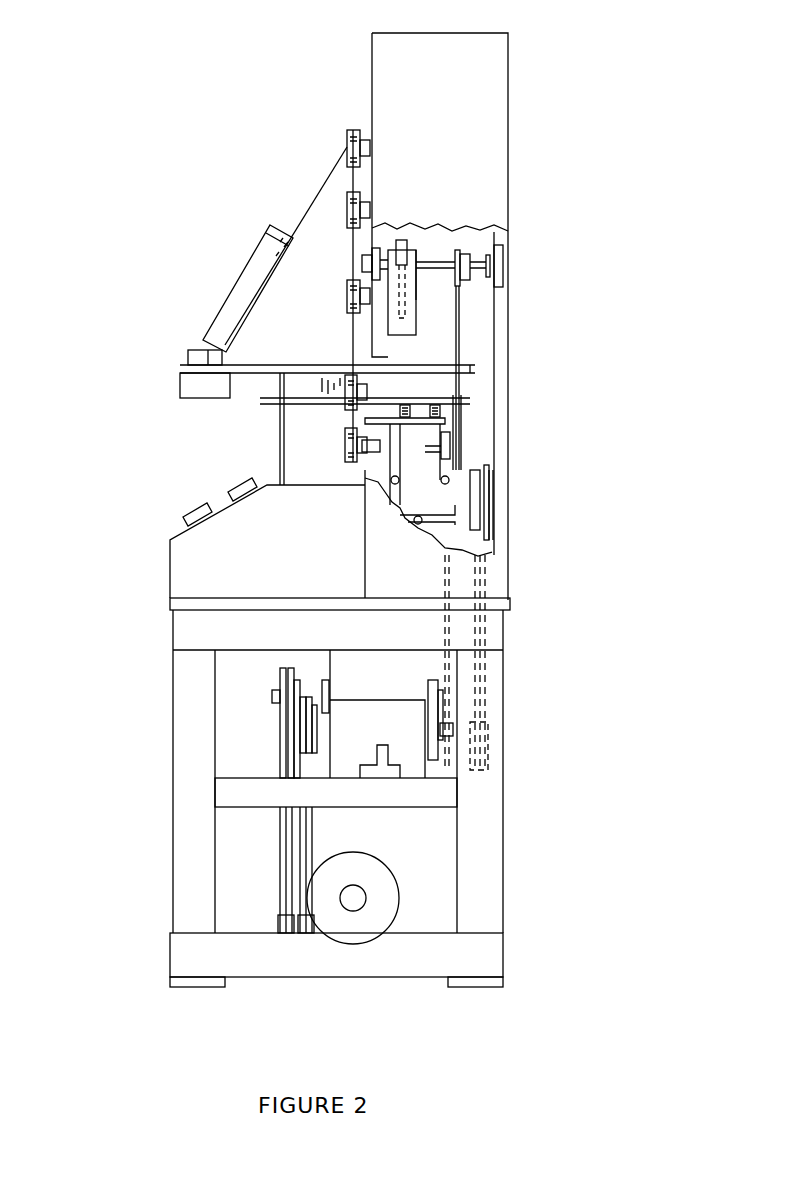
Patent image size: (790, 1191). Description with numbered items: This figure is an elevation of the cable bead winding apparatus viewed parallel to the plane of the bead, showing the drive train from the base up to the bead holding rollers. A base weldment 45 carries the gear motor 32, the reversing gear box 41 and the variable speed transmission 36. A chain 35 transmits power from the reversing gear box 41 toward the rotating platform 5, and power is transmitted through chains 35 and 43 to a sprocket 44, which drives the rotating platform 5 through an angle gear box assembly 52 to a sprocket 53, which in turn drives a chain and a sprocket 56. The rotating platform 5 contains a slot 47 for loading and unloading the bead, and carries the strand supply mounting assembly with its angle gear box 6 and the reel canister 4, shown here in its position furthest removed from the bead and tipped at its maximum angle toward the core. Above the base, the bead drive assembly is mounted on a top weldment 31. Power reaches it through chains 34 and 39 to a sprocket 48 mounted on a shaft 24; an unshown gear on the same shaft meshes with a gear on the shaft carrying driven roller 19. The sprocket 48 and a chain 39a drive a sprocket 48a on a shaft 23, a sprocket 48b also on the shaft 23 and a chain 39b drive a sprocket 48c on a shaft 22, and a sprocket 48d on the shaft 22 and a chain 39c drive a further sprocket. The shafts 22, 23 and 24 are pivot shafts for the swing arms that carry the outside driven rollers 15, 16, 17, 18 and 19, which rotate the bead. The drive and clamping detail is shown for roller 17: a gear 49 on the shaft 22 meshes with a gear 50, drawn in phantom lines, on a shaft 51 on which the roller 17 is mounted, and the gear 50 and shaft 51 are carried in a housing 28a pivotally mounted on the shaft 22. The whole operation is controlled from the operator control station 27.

The canister 4 is at (245, 257).
The rotating platform 5 is at (312, 369).
The angle gear box 6 is at (175, 377).
The driven roller 15 is at (345, 138).
The driven roller 16 is at (345, 203).
The driven roller 17 is at (345, 292).
The driven roller 18 is at (340, 407).
The driven roller 19 is at (340, 440).
The shaft 22 is at (482, 250).
The shaft 23 is at (497, 398).
The shaft 24 is at (484, 458).
The operator control station 27 is at (168, 577).
The housing 28a is at (415, 250).
The top weldment 31 is at (510, 63).
The gear motor 32 is at (402, 898).
The chain 34 is at (318, 831).
The chain 35 is at (275, 831).
The variable speed transmission 36 is at (409, 760).
The chain 39 is at (452, 700).
The chain 39a is at (464, 426).
The chain 39b is at (478, 330).
The chain 39c is at (466, 230).
The reversing gear box 41 is at (423, 668).
The chain 43 is at (498, 542).
The sprocket 44 is at (496, 490).
The base weldment 45 is at (505, 865).
The slot 47 is at (338, 341).
The sprocket 48 is at (465, 442).
The sprocket 48a is at (455, 373).
The sprocket 48b is at (476, 380).
The sprocket 48c is at (467, 283).
The sprocket 48d is at (442, 250).
The gear 49 is at (402, 235).
The gear 50 is at (420, 308).
The shaft 51 is at (397, 296).
The angle gear box assembly 52 is at (412, 490).
The sprocket 53 is at (478, 410).
The sprocket 56 is at (250, 408).